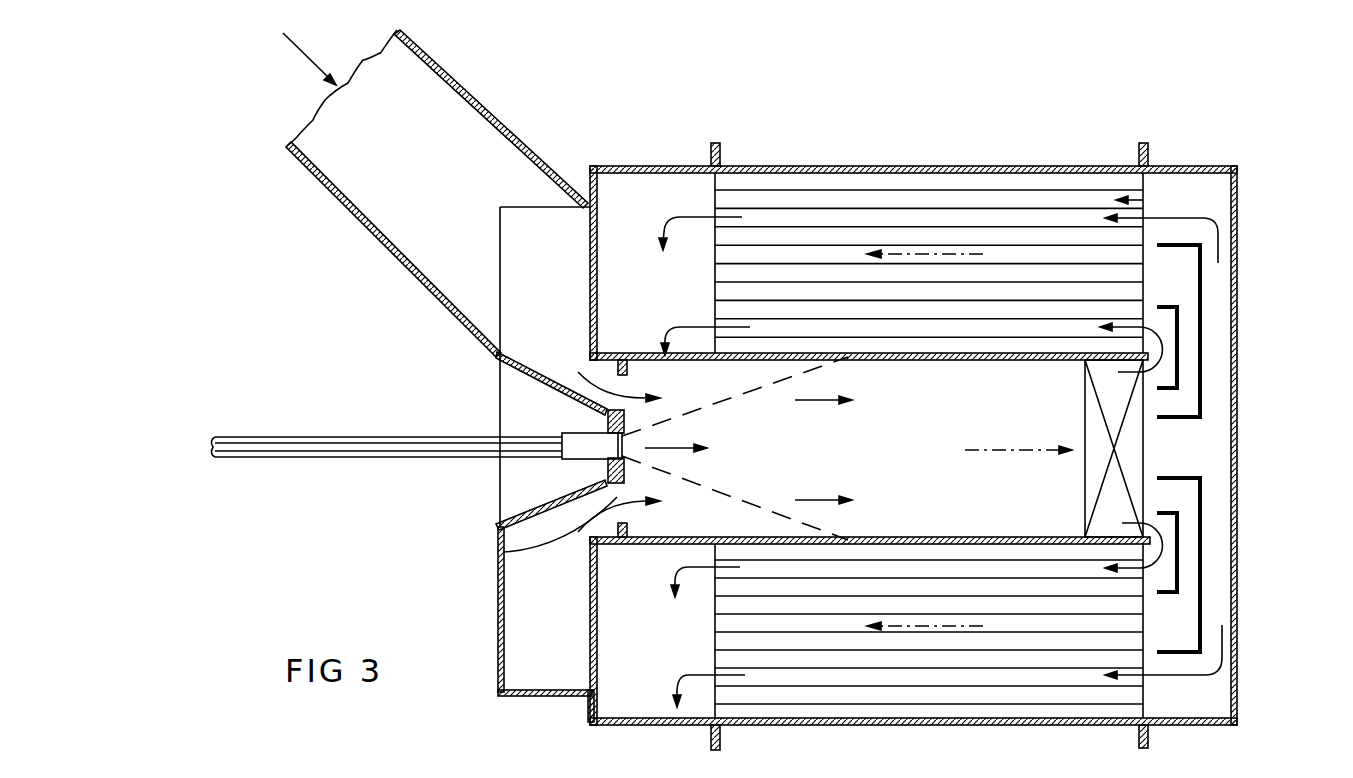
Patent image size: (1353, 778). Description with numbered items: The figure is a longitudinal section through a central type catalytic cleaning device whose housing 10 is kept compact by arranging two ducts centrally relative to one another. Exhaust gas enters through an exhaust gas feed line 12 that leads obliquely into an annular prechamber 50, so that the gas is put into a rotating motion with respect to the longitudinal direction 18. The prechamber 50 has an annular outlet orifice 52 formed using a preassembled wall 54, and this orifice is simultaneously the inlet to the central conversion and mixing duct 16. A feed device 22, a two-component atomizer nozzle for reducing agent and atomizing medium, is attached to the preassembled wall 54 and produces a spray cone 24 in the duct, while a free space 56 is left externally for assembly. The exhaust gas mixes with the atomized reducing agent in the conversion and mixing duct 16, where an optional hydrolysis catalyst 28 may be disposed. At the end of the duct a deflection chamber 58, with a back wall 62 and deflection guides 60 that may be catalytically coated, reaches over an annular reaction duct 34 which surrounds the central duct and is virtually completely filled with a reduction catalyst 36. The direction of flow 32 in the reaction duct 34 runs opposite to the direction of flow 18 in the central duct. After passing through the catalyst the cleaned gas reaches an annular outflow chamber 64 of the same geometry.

The housing 10 is at (913, 168).
The exhaust gas feed line 12 is at (476, 102).
The conversion and mixing duct 16 is at (903, 487).
The direction of flow 18 is at (1030, 462).
The feed device 22 is at (590, 453).
The spray cone 24 is at (733, 405).
The hydrolysis catalyst 28 is at (1090, 398).
The direction of flow 32 is at (908, 256).
The reaction duct 34 is at (1143, 200).
The reduction catalyst 36 is at (1068, 190).
The annular prechamber 50 is at (555, 613).
The annular outlet orifice 52 is at (503, 551).
The preassembled wall 54 is at (605, 424).
The free space 56 is at (520, 388).
The deflection chamber 58 is at (1217, 333).
The deflection guides 60 is at (1180, 317).
The back wall 62 is at (1237, 403).
The annular outflow chamber 64 is at (647, 193).